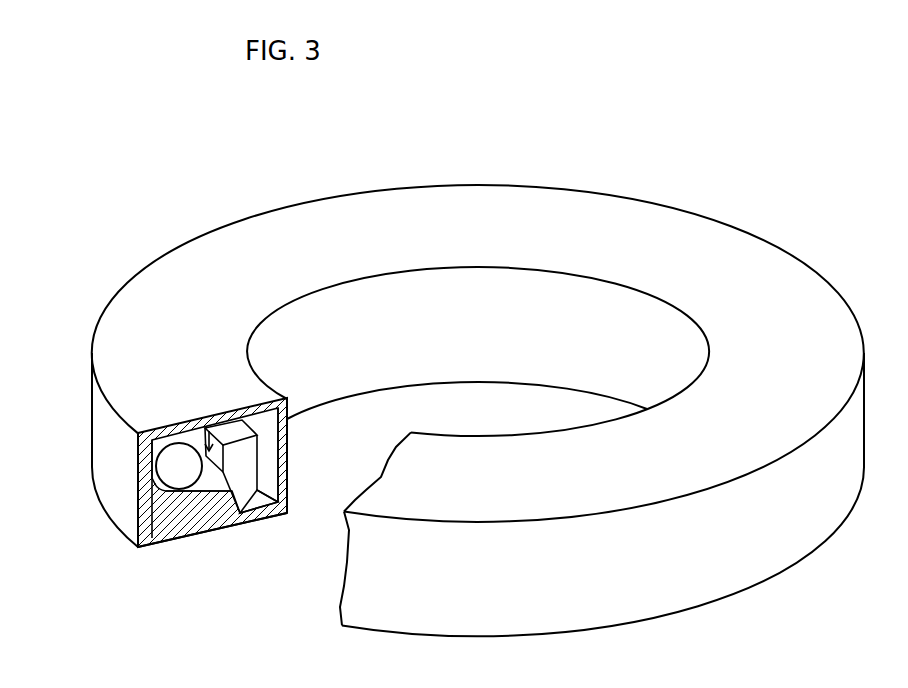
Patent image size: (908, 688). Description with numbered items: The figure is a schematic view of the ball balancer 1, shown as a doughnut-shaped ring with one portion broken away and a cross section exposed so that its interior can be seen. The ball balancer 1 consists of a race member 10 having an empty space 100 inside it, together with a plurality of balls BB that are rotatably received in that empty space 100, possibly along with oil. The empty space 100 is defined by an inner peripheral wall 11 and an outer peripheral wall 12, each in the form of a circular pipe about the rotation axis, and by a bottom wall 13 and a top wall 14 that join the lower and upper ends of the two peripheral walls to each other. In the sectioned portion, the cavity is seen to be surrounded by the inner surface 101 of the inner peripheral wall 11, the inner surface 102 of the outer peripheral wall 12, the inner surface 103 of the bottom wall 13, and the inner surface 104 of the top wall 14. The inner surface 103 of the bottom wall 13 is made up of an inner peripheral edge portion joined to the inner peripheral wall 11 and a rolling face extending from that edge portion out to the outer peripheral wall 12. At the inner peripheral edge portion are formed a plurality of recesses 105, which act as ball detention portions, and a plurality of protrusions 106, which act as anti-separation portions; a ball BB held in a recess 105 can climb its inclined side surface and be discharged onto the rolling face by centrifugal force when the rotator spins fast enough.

The ball balancer 1 is at (243, 150).
The race member 10 is at (485, 186).
The inner peripheral wall 11 is at (291, 433).
The outer peripheral wall 12 is at (142, 461).
The bottom wall 13 is at (182, 532).
The top wall 14 is at (209, 431).
The empty space 100 is at (200, 432).
The inner surface of the inner peripheral wall 101 is at (265, 463).
The inner surface of the outer peripheral wall 102 is at (178, 472).
The inner surface of the bottom wall 103 is at (216, 484).
The inner surface of the top wall 104 is at (190, 437).
The recess 105 is at (250, 503).
The protrusion 106 is at (244, 463).
The ball BB is at (176, 494).